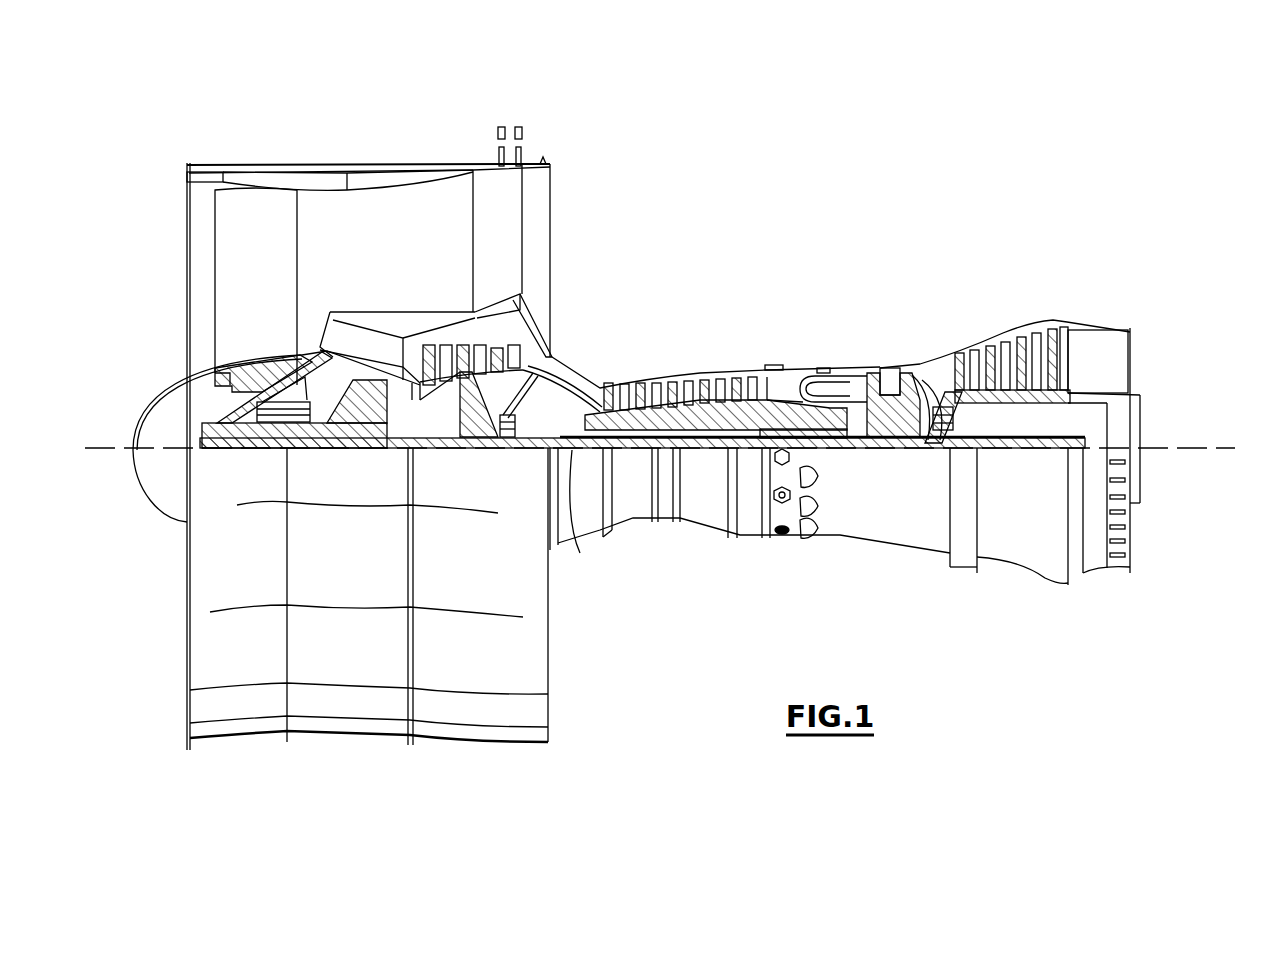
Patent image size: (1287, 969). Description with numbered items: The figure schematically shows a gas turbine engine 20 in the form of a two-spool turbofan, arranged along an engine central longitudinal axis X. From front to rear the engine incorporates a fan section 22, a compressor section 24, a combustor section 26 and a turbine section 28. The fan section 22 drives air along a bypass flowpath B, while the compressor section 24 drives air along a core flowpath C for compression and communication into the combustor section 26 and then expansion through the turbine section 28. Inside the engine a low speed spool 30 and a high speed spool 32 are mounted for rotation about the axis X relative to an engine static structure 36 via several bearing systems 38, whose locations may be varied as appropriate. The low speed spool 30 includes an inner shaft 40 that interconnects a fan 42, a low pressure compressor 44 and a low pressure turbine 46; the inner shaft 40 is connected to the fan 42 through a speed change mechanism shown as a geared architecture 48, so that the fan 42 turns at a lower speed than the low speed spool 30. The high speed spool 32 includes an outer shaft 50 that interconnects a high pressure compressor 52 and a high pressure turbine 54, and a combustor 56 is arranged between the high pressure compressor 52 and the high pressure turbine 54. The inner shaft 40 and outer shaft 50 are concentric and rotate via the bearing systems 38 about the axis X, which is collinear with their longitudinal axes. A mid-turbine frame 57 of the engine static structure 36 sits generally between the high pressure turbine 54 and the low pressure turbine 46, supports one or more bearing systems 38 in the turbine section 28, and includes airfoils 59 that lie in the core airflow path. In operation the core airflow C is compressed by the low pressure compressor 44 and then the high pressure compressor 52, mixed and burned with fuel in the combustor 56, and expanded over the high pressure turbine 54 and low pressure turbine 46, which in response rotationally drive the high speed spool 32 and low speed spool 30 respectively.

The gas turbine engine 20 is at (830, 212).
The fan section 22 is at (395, 142).
The compressor section 24 is at (752, 283).
The combustor section 26 is at (760, 283).
The turbine section 28 is at (868, 283).
The low speed spool 30 is at (707, 455).
The high speed spool 32 is at (752, 400).
The engine static structure 36 is at (748, 540).
The bearing systems 38 is at (265, 448).
The inner shaft 40 is at (642, 506).
The fan 42 is at (240, 293).
The low pressure compressor 44 is at (483, 348).
The low pressure turbine 46 is at (1017, 323).
The geared architecture 48 is at (373, 432).
The outer shaft 50 is at (836, 440).
The high pressure compressor 52 is at (677, 388).
The high pressure turbine 54 is at (888, 368).
The combustor 56 is at (822, 392).
The mid-turbine frame 57 is at (933, 352).
The airfoils 59 is at (958, 422).
The bypass flowpath B is at (430, 238).
The core flowpath C is at (377, 347).
The engine central longitudinal axis X is at (1225, 447).